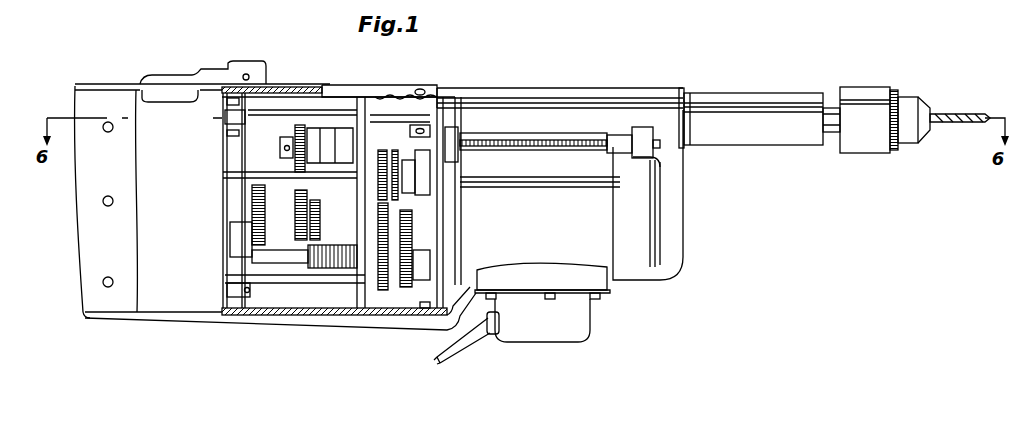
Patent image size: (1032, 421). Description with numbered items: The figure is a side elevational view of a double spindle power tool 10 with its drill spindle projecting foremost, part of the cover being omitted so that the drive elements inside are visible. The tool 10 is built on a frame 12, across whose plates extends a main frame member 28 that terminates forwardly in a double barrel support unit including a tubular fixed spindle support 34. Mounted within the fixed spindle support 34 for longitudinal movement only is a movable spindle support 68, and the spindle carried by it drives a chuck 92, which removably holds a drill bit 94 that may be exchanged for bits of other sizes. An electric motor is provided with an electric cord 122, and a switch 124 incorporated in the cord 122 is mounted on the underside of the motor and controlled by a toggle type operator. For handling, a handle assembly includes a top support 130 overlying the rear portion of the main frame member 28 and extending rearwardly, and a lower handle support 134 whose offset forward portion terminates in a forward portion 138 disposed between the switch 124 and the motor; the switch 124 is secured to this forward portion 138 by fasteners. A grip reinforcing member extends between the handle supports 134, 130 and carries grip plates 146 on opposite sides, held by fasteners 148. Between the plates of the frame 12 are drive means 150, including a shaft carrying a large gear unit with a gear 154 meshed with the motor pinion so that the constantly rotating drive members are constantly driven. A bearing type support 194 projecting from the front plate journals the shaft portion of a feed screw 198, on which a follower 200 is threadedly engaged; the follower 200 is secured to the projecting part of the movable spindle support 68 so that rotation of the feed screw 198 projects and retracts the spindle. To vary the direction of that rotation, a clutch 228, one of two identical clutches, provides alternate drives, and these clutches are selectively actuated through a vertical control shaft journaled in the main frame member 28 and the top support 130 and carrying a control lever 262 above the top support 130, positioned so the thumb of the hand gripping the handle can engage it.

The power tool 10 is at (606, 82).
The frame 12 is at (444, 82).
The main frame member 28 is at (340, 87).
The fixed spindle support 34 is at (686, 96).
The movable spindle support 68 is at (778, 92).
The chuck 92 is at (876, 153).
The drill bit 94 is at (955, 114).
The electric cord 122 is at (463, 352).
The switch 124 is at (556, 325).
The top support 130 is at (290, 84).
The lower handle support 134 is at (310, 330).
The forward portion 138 is at (612, 293).
The grip plates 146 is at (125, 166).
The fasteners 148 is at (150, 277).
The drive means 150 is at (386, 283).
The gear 154 is at (407, 295).
The bearing type support 194 is at (458, 132).
The feed screw 198 is at (567, 150).
The follower 200 is at (645, 158).
The clutch 228 is at (240, 229).
The control lever 262 is at (213, 70).